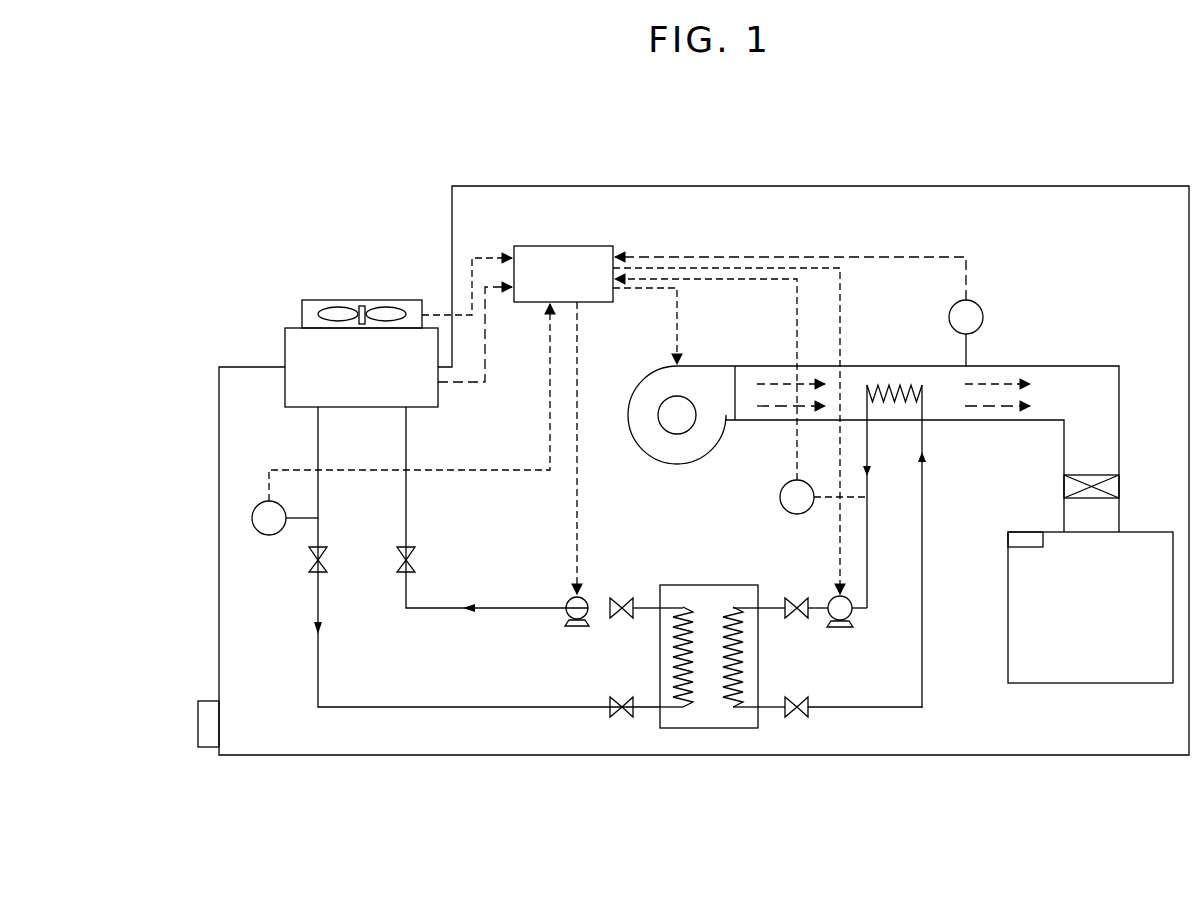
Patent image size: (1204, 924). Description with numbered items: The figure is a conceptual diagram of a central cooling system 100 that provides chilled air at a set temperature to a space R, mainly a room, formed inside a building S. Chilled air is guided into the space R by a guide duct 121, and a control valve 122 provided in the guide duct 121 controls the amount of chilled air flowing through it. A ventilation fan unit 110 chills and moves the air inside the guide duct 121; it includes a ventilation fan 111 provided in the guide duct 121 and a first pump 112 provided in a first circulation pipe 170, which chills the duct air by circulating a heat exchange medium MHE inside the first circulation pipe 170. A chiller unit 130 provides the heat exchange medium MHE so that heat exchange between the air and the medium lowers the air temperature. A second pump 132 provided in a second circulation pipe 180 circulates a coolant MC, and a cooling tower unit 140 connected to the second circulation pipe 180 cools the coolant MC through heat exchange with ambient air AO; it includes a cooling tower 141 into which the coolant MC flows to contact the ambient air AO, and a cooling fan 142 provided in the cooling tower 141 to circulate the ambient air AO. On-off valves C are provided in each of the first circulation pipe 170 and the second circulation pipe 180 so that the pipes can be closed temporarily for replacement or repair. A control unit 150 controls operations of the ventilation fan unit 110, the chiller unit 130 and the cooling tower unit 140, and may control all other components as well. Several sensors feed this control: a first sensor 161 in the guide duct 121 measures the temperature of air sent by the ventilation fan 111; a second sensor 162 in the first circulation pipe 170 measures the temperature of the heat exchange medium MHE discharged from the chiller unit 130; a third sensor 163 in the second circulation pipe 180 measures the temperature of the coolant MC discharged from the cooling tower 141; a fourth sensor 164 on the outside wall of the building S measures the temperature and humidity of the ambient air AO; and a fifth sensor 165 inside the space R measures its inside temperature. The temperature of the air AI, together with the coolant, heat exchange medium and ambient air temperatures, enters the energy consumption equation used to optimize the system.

The central cooling system 100 is at (662, 143).
The ventilation fan unit 110 is at (873, 406).
The ventilation fan 111 is at (710, 366).
The first pump 112 is at (828, 598).
The guide duct 121 is at (1070, 366).
The control valve 122 is at (1095, 475).
The chiller unit 130 is at (712, 728).
The second pump 132 is at (577, 630).
The cooling tower unit 140 is at (345, 306).
The cooling tower 141 is at (297, 327).
The cooling fan 142 is at (340, 300).
The control unit 150 is at (562, 246).
The first sensor 161 is at (976, 300).
The second sensor 162 is at (790, 480).
The third sensor 163 is at (252, 518).
The fourth sensor 164 is at (205, 747).
The fifth sensor 165 is at (1027, 547).
The first circulation pipe 170 is at (903, 707).
The second circulation pipe 180 is at (445, 707).
The building S is at (845, 186).
The space R is at (1103, 683).
The on-off valves C is at (325, 547).
The ambient air AO is at (407, 265).
The air AI is at (1028, 366).
The coolant MC is at (503, 757).
The heat exchange medium MHE is at (867, 707).